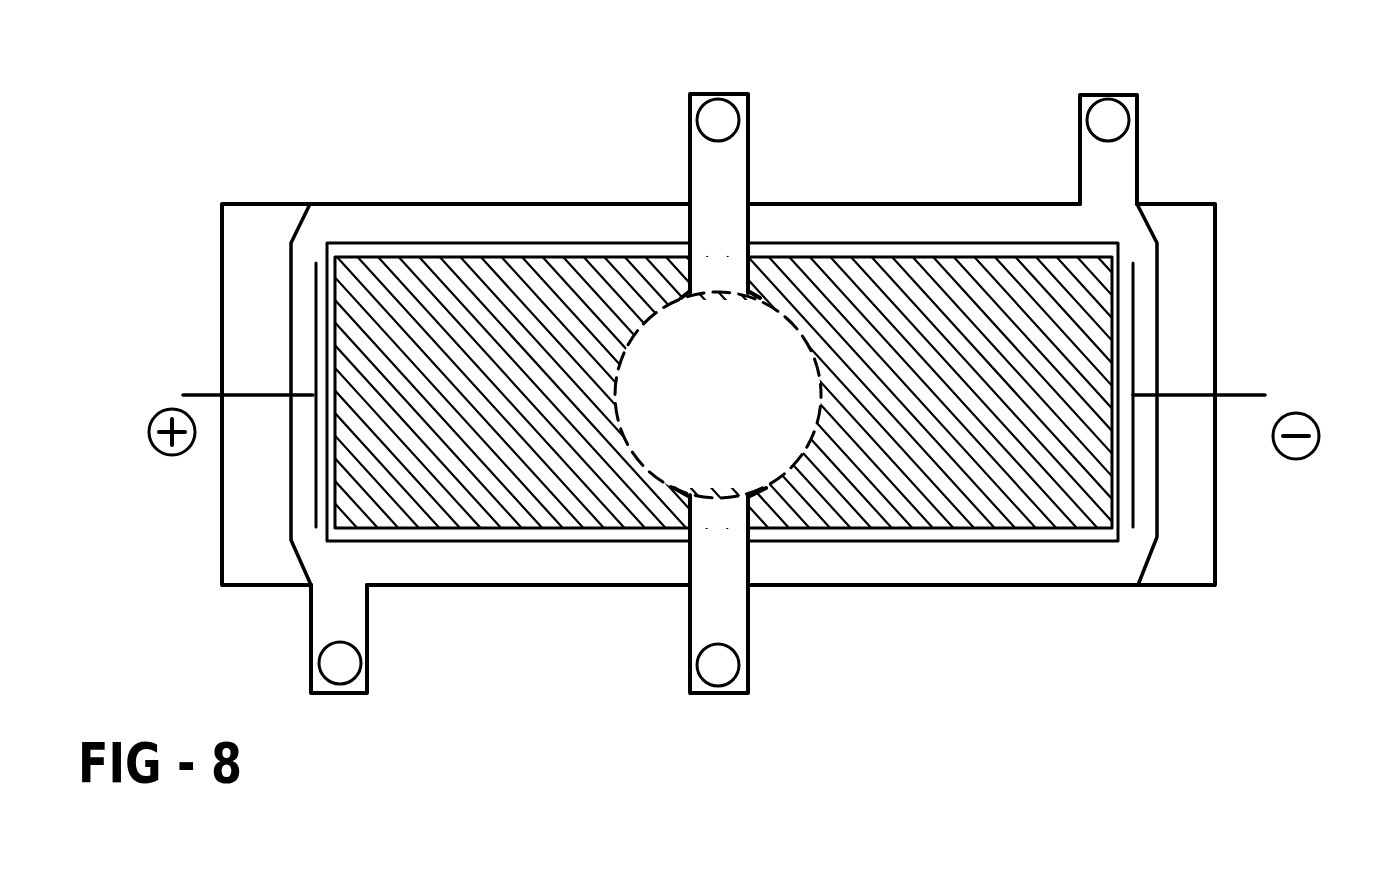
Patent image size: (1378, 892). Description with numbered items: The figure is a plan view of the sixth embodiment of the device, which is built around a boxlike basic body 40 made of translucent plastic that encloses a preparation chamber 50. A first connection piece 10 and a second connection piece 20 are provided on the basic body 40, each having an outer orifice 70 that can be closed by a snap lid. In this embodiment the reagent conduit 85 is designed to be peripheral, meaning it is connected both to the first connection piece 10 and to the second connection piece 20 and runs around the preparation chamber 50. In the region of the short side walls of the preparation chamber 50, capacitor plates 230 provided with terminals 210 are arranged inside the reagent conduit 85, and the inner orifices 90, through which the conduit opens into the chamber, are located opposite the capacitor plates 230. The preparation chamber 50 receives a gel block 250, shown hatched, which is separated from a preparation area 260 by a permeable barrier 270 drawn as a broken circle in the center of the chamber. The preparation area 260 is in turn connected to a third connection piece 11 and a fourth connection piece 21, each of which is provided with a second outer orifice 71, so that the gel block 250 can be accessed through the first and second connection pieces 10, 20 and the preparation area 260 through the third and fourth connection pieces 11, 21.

The first connection piece 10 is at (343, 617).
The third connection piece 11 is at (723, 179).
The second connection piece 20 is at (1113, 172).
The fourth connection piece 21 is at (695, 606).
The basic body 40 is at (228, 333).
The preparation chamber 50 is at (963, 532).
The outer orifice 70 is at (340, 663).
The second outer orifice 71 is at (712, 120).
The reagent conduit 85 is at (550, 230).
The inner orifice 90 is at (330, 438).
The terminal 210 is at (260, 398).
The capacitor plate 230 is at (312, 333).
The active material 250 is at (503, 453).
The preparation area 260 is at (708, 382).
The permeable barrier 270 is at (822, 395).